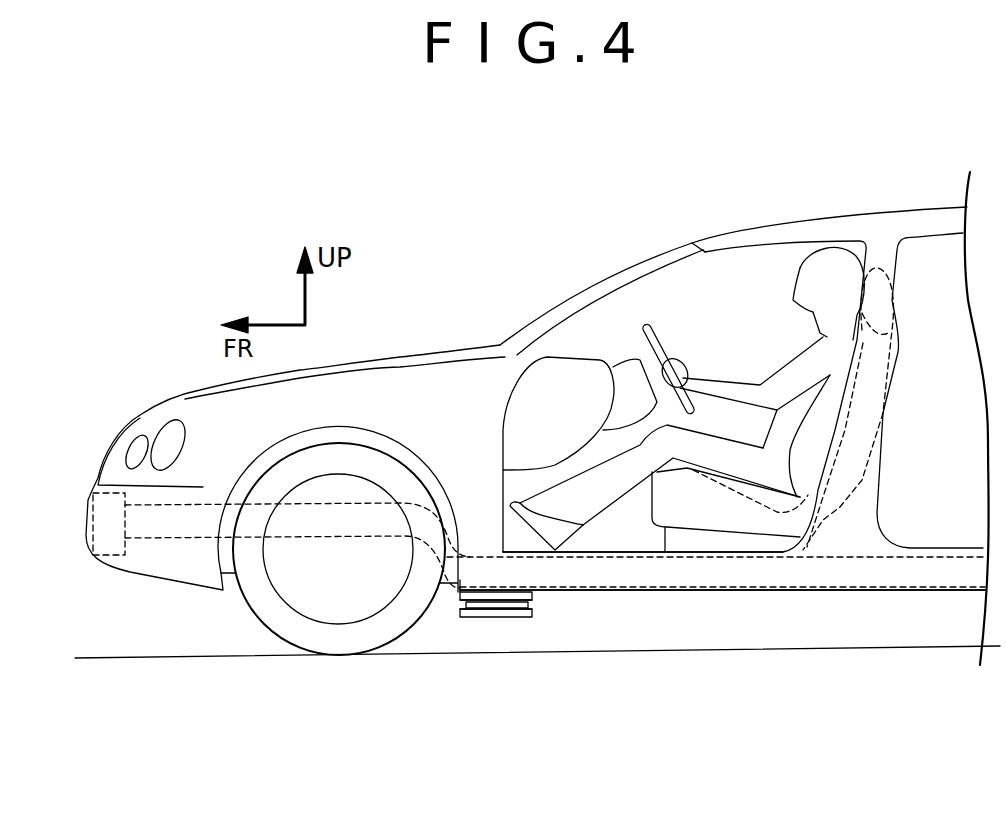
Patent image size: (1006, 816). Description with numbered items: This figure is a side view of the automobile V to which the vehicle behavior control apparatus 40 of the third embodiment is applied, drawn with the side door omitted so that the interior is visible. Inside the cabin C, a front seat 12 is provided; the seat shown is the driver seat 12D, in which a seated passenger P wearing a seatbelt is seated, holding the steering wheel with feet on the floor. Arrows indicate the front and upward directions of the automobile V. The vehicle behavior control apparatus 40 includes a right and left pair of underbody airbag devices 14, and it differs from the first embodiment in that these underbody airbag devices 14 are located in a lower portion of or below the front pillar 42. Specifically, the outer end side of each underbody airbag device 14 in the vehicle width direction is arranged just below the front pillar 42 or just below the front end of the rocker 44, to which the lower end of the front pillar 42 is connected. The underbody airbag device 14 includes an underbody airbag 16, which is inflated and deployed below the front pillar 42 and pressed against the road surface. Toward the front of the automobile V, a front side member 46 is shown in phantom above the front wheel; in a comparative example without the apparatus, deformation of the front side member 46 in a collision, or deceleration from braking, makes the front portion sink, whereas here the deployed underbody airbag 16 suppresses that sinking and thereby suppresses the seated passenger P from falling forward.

The front seat 12 is at (805, 498).
The driver seat 12D is at (903, 349).
The underbody airbag device 14 is at (515, 616).
The underbody airbag 16 is at (468, 616).
The vehicle behavior control apparatus 40 is at (559, 626).
The front pillar 42 is at (485, 432).
The rocker 44 is at (705, 575).
The front side member 46 is at (177, 515).
The seated passenger P is at (806, 257).
The automobile V is at (830, 205).
The cabin C is at (737, 307).